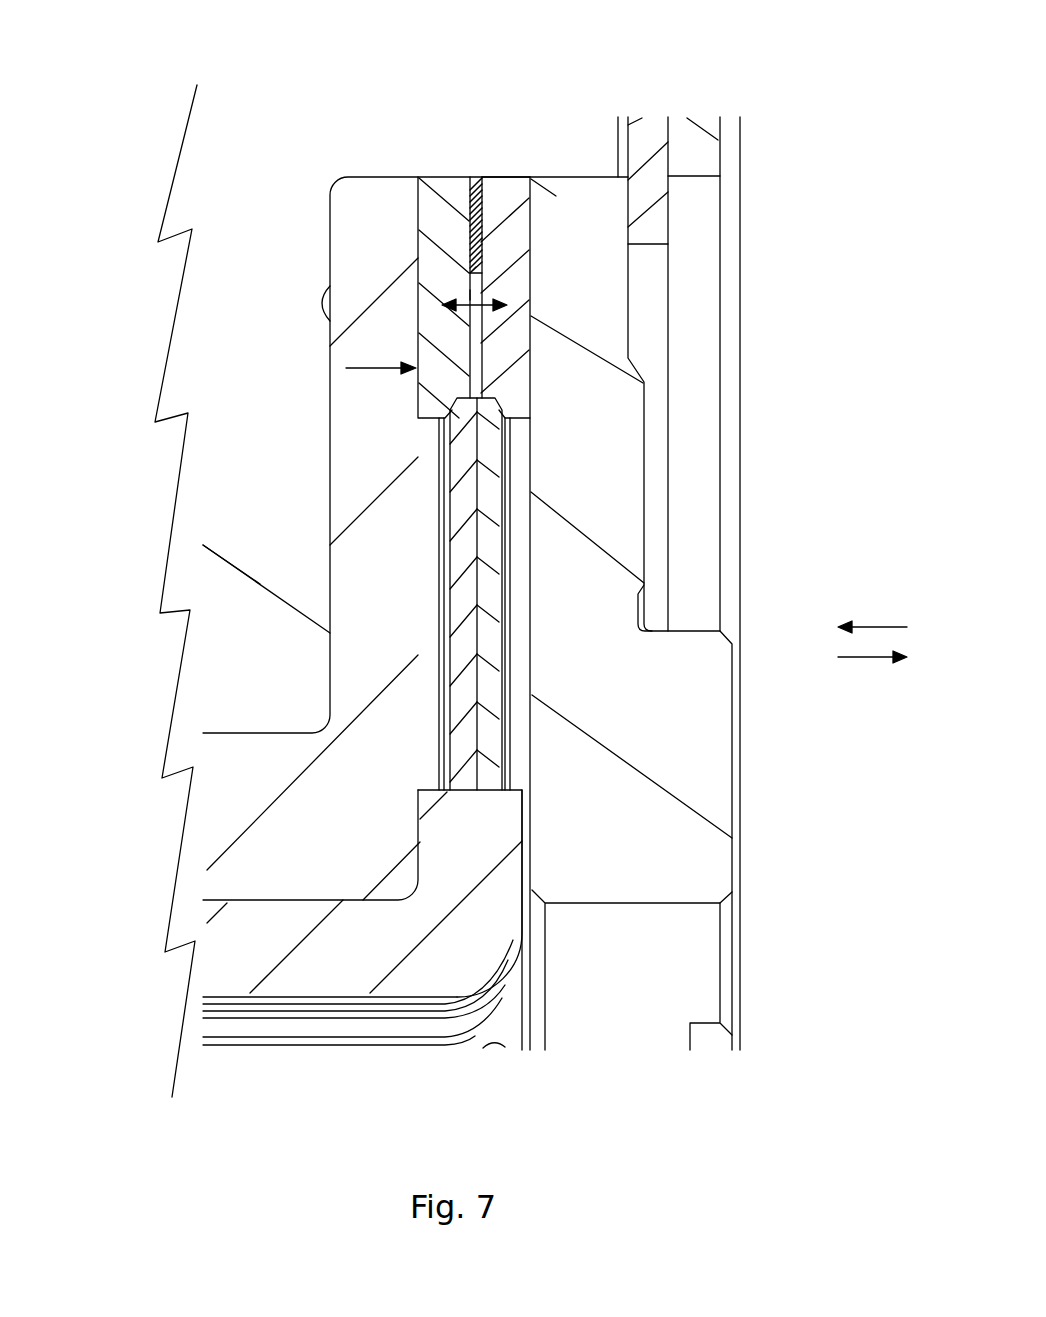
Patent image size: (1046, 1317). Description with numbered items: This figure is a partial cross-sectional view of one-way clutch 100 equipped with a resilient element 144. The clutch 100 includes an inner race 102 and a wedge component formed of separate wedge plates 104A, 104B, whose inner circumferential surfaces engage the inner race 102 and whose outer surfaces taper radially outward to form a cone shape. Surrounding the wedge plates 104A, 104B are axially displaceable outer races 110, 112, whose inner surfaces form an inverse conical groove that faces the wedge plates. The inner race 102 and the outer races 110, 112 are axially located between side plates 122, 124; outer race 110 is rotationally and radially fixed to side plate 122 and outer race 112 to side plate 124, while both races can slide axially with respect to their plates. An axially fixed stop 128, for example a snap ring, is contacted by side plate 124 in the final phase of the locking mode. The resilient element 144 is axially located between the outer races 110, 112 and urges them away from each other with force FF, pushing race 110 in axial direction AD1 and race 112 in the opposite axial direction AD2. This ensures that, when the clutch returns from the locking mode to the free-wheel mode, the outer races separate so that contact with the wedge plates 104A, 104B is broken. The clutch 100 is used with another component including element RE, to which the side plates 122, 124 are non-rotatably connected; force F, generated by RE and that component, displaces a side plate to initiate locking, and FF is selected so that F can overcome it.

The one-way clutch 100 is at (786, 151).
The inner race 102 is at (505, 963).
The wedge plate 104A is at (450, 457).
The wedge plate 104B is at (487, 480).
The outer race 110 is at (439, 175).
The outer race 112 is at (507, 173).
The side plate 122 is at (220, 795).
The side plate 124 is at (682, 755).
The axially fixed stop 128 is at (650, 137).
The resilient element 144 is at (474, 172).
The force FF is at (463, 296).
The force F is at (346, 368).
The element RE is at (217, 508).
The axial direction AD1 is at (876, 627).
The axial direction AD2 is at (871, 660).